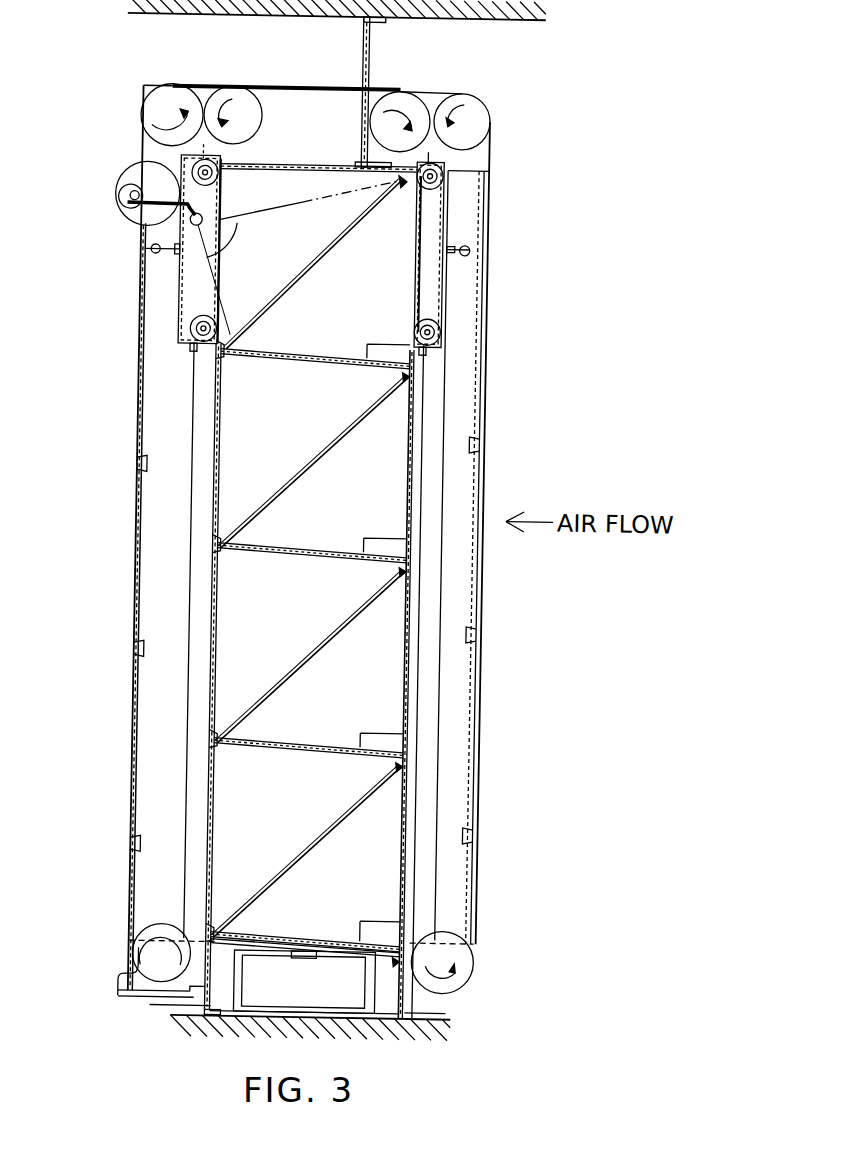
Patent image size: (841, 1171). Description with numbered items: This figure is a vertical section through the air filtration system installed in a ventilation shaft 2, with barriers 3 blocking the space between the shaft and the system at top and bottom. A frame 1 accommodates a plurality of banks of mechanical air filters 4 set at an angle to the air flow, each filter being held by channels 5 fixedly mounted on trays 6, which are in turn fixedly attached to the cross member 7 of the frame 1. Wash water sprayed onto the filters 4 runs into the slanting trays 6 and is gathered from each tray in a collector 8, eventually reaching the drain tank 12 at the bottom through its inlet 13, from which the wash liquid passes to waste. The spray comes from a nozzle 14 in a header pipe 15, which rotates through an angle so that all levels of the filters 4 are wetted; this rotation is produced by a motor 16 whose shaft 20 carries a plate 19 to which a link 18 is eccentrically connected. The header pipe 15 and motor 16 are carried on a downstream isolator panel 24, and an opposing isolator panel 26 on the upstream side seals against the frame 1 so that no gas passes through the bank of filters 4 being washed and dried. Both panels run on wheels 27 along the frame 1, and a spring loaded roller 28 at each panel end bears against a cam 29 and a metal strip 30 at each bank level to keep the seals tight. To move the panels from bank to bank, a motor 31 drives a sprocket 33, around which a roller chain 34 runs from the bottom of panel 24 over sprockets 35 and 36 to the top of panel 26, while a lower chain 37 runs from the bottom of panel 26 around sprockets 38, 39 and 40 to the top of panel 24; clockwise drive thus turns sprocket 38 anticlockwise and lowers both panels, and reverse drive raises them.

The frame 1 is at (412, 459).
The ventilation shaft 2 is at (494, 18).
The barriers 3 is at (366, 46).
The mechanical air filters 4 is at (386, 202).
The channels 5 is at (411, 374).
The trays 6 is at (290, 351).
The cross member 7 is at (434, 169).
The collector 8 is at (368, 353).
The drain tank 12 is at (272, 975).
The inlet 13 is at (320, 958).
The nozzle 14 is at (220, 223).
The header pipe 15 is at (201, 222).
The motor 16 is at (131, 171).
The link 18 is at (170, 208).
The plate 19 is at (128, 190).
The shaft 20 is at (128, 200).
The downstream isolator panel 24 is at (194, 332).
The isolator panel 26 is at (444, 212).
The wheel 27 is at (214, 174).
The spring loaded roller 28 is at (176, 254).
The cam 29 is at (150, 264).
The metal strip 30 is at (145, 552).
The motor 31 is at (152, 965).
The sprocket 33 is at (176, 929).
The roller chain 34 is at (140, 744).
The sprocket 35 is at (174, 93).
The sprocket 36 is at (389, 99).
The lower chain 37 is at (484, 409).
The sprocket 38 is at (466, 963).
The sprocket 39 is at (469, 108).
The sprocket 40 is at (226, 96).